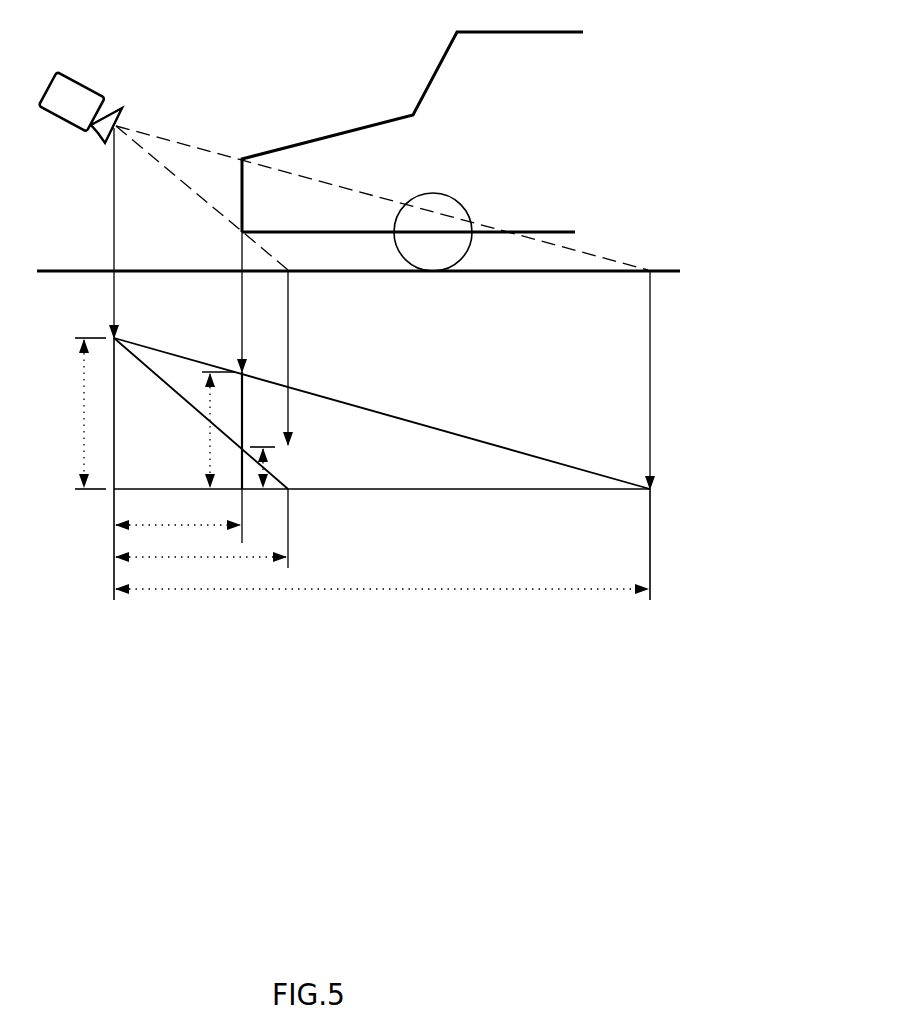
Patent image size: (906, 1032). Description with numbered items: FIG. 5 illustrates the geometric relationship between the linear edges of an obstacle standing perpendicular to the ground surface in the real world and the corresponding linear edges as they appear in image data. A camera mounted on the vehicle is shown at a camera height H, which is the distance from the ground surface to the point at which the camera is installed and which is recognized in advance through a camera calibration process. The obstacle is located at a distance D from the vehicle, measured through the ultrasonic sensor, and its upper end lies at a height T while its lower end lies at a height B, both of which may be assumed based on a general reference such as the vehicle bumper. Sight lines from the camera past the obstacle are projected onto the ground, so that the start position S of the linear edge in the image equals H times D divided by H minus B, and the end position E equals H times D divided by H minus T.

The camera height H is at (87, 413).
The height of an upper end of the obstacle T is at (214, 429).
The height of a lower end of the obstacle B is at (268, 467).
The distance from the vehicle to the obstacle D is at (178, 509).
The start position of the linear edge S is at (201, 541).
The end position of the linear edge E is at (382, 573).